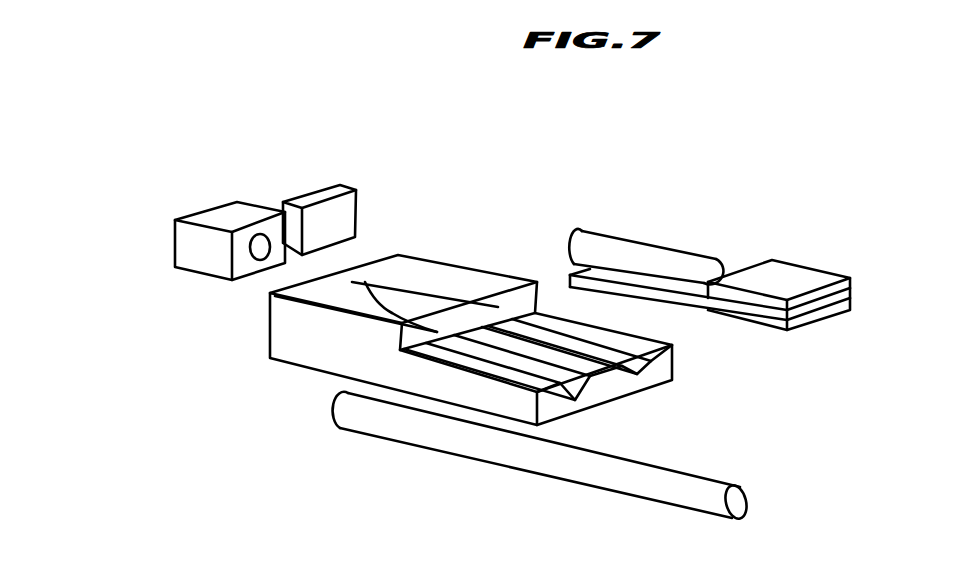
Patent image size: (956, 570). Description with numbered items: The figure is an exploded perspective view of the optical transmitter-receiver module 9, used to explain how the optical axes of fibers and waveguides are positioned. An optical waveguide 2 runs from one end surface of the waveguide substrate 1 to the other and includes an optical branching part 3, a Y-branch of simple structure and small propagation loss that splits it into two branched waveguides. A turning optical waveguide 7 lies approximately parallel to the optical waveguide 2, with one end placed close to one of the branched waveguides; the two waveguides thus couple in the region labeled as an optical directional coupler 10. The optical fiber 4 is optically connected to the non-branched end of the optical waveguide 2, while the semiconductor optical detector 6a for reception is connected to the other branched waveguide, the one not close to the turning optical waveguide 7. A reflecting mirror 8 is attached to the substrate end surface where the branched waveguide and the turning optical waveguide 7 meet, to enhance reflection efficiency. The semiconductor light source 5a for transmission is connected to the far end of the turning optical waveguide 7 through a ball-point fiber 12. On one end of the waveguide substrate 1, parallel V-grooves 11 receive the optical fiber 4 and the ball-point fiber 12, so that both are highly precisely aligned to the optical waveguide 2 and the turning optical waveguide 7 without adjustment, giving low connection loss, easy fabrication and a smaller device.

The waveguide substrate 1 is at (323, 360).
The optical waveguide 2 is at (350, 311).
The optical branching part 3 is at (382, 300).
The optical fiber 4 is at (423, 430).
The semiconductor light source 5a is at (793, 270).
The semiconductor optical detector 6a is at (213, 213).
The turning optical waveguide 7 is at (420, 288).
The reflecting mirror 8 is at (318, 203).
The optical transmitter-receiver module 9 is at (515, 272).
The optical directional coupler 10 is at (365, 282).
The V-grooves 11 is at (585, 388).
The ball-point fiber 12 is at (682, 272).